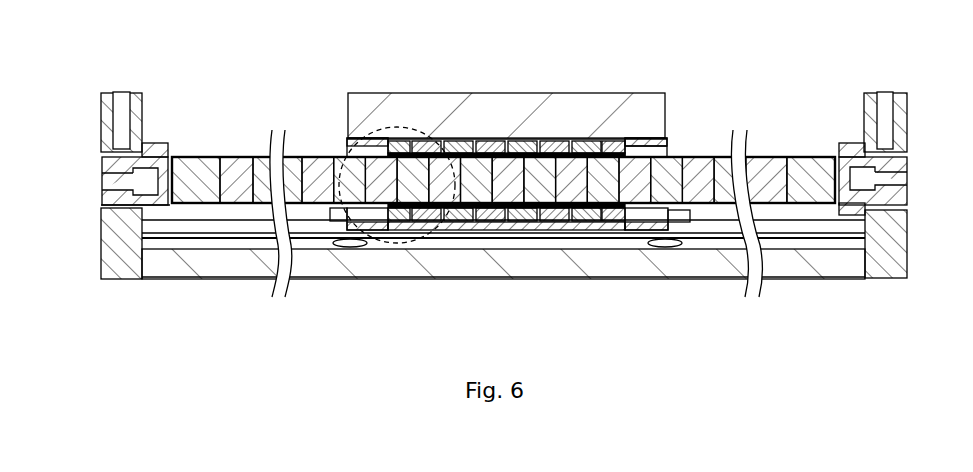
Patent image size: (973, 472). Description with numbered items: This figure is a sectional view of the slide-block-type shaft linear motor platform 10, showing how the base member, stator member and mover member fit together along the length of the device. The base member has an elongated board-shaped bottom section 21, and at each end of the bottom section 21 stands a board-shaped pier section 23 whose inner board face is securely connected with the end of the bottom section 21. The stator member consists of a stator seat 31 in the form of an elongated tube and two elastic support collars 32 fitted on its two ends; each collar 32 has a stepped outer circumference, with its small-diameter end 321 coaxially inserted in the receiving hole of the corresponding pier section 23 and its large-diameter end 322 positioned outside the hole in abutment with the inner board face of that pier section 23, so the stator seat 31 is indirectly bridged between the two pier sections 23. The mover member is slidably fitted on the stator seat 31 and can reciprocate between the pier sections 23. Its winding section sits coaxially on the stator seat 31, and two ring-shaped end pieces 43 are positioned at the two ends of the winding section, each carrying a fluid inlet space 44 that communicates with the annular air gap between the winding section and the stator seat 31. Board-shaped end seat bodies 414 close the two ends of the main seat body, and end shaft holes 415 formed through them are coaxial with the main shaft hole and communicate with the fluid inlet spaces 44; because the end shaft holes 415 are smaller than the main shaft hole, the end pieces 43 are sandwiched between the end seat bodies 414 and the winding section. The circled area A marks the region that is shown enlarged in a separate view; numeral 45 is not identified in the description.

The slide-block-type shaft linear motor platform 10 is at (152, 338).
The bottom section 21 is at (415, 265).
The pier section 23 is at (104, 95).
The stator seat 31 is at (588, 230).
The elastic support collar 32 is at (843, 140).
The small-diameter end 321 is at (104, 208).
The large-diameter end 322 is at (155, 148).
The end piece 43 is at (399, 155).
The fluid inlet space 44 is at (381, 154).
The spacer 45 is at (647, 152).
The end seat body 414 is at (350, 145).
The end shaft hole 415 is at (367, 150).
The circled area A is at (467, 135).